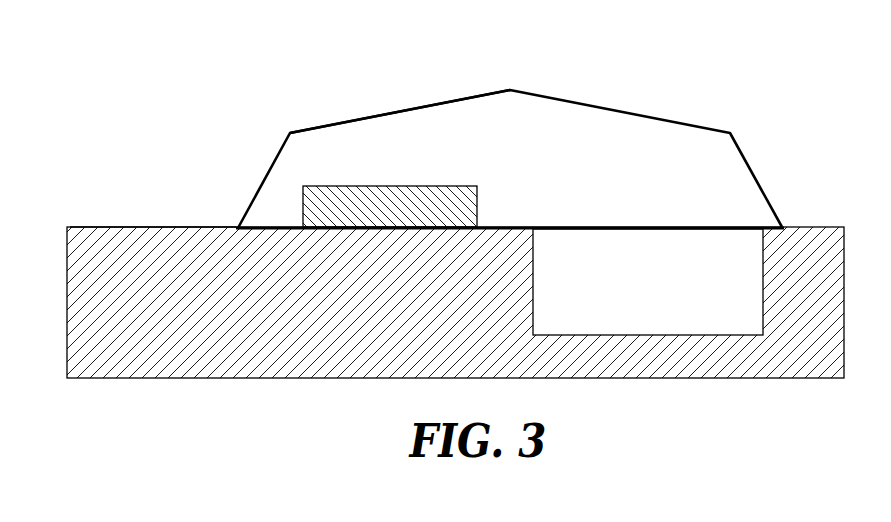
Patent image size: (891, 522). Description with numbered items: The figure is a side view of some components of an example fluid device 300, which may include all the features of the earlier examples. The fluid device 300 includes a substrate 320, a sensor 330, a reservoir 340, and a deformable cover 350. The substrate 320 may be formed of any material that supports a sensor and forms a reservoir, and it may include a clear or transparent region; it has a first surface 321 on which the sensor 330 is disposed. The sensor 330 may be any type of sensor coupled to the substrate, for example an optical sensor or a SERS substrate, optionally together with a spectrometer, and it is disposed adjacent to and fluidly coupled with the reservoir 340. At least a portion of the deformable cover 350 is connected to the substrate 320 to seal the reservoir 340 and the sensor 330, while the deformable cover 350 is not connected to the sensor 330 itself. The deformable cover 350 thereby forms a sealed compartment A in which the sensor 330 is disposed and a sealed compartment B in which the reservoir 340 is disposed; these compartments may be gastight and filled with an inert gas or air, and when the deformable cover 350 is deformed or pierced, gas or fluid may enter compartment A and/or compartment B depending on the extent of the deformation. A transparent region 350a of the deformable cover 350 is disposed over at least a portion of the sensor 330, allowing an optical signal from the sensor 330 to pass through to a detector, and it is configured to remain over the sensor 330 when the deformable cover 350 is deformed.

The fluid device 300 is at (455, 197).
The substrate 320 is at (455, 283).
The first surface 321 is at (115, 227).
The sensor 330 is at (368, 216).
The reservoir 340 is at (680, 328).
The deformable cover 350 is at (510, 122).
The transparent region 350a is at (297, 125).
The sealed compartment A is at (514, 122).
The sealed compartment B is at (611, 253).